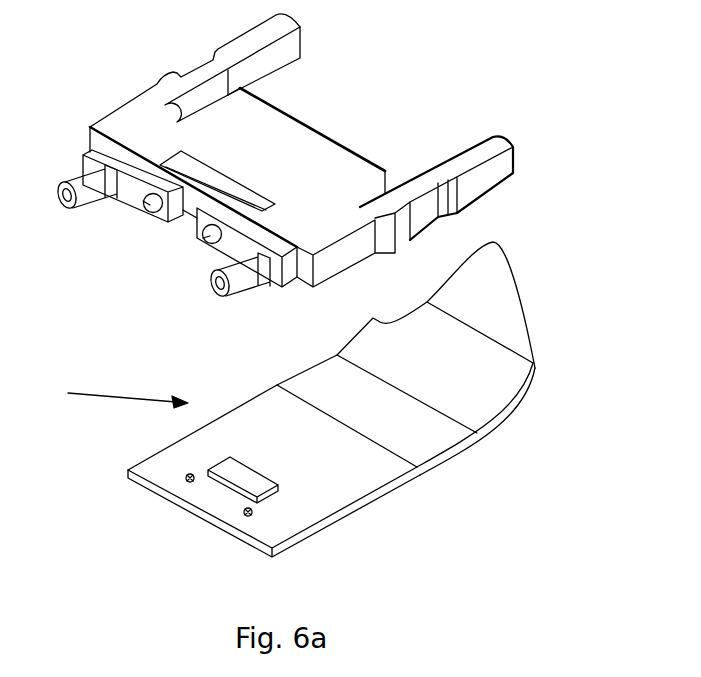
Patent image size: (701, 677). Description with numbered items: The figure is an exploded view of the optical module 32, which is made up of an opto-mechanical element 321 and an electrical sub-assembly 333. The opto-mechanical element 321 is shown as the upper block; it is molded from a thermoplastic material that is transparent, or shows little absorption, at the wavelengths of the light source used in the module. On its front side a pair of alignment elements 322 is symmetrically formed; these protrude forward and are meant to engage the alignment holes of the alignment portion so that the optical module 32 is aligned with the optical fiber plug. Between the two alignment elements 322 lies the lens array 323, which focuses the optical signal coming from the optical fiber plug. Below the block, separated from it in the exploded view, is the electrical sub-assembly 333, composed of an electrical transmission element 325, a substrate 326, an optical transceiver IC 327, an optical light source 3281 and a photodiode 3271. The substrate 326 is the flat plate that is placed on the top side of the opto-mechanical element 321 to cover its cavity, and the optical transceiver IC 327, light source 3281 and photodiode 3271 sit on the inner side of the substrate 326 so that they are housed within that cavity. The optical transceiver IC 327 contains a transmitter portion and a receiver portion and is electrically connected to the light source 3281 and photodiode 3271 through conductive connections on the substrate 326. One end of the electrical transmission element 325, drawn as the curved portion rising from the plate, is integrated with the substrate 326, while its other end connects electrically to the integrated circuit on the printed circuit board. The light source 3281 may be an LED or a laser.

The optical module 32 is at (40, 44).
The opto-mechanical element 321 is at (285, 137).
The alignment elements 322 is at (213, 282).
The lens array 323 is at (203, 238).
The electrical transmission element 325 is at (478, 378).
The substrate 326 is at (208, 433).
The optical transceiver IC 327 is at (237, 474).
The photodiode 3271 is at (246, 515).
The optical light source 3281 is at (187, 481).
The electrical sub-assembly 333 is at (108, 398).